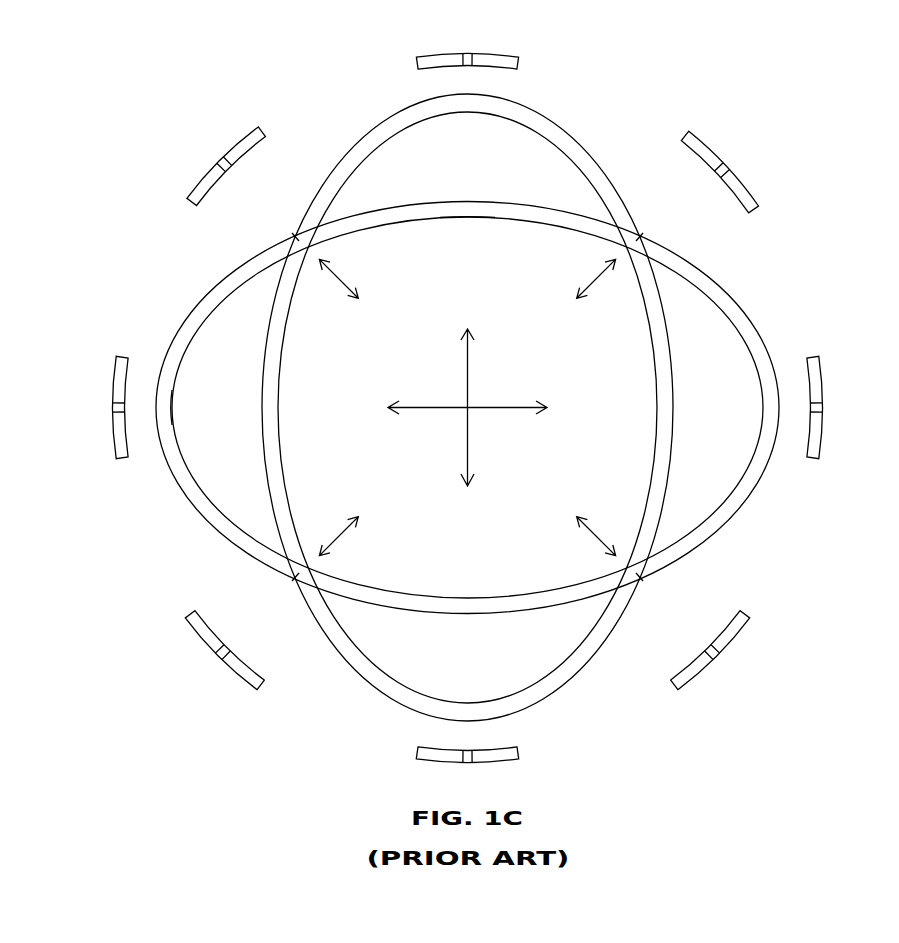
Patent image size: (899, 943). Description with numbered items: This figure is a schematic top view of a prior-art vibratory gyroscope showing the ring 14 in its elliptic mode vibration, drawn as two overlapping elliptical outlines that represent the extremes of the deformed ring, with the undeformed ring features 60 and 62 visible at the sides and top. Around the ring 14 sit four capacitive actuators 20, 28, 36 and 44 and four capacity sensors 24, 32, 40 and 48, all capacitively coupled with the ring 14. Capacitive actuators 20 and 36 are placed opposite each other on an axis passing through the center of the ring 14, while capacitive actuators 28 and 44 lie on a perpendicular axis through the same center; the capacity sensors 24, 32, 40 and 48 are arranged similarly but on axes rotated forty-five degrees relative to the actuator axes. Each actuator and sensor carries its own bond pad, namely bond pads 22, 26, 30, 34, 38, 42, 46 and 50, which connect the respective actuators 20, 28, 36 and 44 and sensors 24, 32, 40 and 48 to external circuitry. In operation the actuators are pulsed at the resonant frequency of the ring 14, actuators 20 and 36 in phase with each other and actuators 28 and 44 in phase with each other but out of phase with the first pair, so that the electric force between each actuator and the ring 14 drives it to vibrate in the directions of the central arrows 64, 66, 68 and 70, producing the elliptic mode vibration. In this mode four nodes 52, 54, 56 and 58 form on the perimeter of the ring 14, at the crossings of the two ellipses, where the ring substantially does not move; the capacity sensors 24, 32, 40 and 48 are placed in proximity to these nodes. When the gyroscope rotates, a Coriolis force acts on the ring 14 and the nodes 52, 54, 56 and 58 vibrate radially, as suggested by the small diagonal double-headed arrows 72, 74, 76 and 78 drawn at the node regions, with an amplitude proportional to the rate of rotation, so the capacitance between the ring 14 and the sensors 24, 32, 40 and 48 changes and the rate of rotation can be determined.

The ring 14 is at (374, 690).
The capacitive actuator 20 is at (518, 63).
The bond pad 22 is at (468, 56).
The capacity sensor 24 is at (750, 192).
The bond pad 26 is at (724, 165).
The capacitive actuator 28 is at (812, 357).
The bond pad 30 is at (822, 408).
The capacity sensor 32 is at (675, 684).
The bond pad 34 is at (712, 657).
The capacitive actuator 36 is at (417, 749).
The bond pad 38 is at (469, 760).
The capacity sensor 40 is at (188, 618).
The bond pad 42 is at (219, 656).
The capacitive actuator 44 is at (120, 358).
The bond pad 46 is at (116, 408).
The capacity sensor 48 is at (190, 188).
The bond pad 50 is at (222, 152).
The node 52 is at (639, 235).
The node 54 is at (638, 574).
The node 56 is at (295, 578).
The node 58 is at (296, 236).
The horizontal ring side 60 is at (173, 407).
The horizontal ring top 62 is at (468, 218).
The arrow 64 is at (430, 408).
The arrow 66 is at (467, 360).
The arrow 68 is at (503, 407).
The arrow 70 is at (468, 433).
The diagonal direction arrow 72 is at (603, 283).
The diagonal direction arrow 74 is at (597, 534).
The diagonal direction arrow 76 is at (335, 540).
The diagonal direction arrow 78 is at (337, 279).